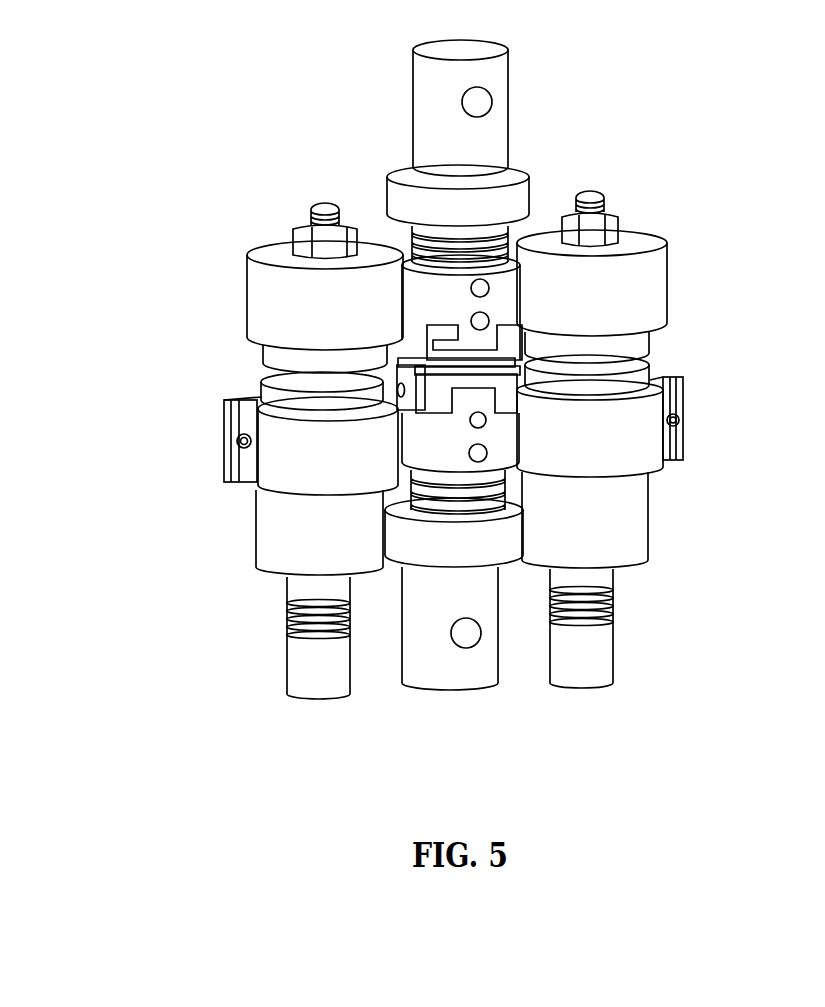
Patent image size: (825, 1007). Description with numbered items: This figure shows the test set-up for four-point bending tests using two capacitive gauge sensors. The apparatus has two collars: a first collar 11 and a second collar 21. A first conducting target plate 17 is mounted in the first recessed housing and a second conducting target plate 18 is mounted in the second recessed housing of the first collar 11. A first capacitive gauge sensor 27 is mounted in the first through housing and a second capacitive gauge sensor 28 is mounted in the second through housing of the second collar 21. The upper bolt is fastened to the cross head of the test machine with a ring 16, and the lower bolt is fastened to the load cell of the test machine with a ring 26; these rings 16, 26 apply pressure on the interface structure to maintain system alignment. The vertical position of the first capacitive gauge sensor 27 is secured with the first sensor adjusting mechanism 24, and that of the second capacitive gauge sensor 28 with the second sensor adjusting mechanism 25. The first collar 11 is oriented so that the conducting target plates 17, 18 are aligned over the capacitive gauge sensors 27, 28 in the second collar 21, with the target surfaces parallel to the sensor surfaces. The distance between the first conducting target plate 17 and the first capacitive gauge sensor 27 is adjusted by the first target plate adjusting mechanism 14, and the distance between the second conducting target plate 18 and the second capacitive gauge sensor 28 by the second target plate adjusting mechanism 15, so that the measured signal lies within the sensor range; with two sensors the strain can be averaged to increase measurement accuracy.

The first collar 11 is at (670, 278).
The first target plate adjusting mechanism 14 is at (291, 228).
The second target plate adjusting mechanism 15 is at (602, 187).
The ring 16 is at (408, 208).
The first conducting target plate 17 is at (260, 367).
The second conducting target plate 18 is at (657, 348).
The second collar 21 is at (540, 473).
The first sensor adjusting mechanism 24 is at (237, 452).
The second sensor adjusting mechanism 25 is at (680, 432).
The ring 26 is at (522, 522).
The first capacitive gauge sensor 27 is at (254, 535).
The second capacitive gauge sensor 28 is at (648, 495).